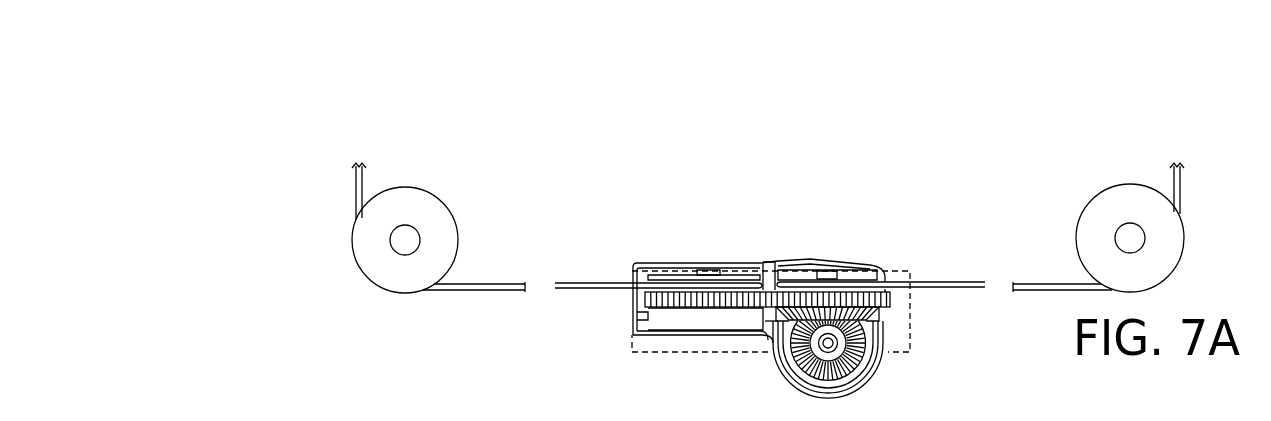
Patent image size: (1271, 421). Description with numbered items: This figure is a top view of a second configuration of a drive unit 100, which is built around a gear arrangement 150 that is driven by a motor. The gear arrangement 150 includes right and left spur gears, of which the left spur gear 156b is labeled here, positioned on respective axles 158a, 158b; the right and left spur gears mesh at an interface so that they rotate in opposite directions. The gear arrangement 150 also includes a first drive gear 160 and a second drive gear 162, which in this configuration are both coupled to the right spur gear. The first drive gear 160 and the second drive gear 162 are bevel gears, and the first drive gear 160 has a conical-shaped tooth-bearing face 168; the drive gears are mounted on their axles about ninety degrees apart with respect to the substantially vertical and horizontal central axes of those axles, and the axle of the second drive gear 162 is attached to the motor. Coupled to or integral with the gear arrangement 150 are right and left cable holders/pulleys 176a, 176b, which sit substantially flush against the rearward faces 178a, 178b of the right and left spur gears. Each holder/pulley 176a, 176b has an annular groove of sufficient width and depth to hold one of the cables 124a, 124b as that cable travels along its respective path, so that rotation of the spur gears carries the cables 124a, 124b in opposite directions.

The drive unit 100 is at (277, 157).
The cable 124a is at (1048, 283).
The cable 124b is at (497, 283).
The gear arrangement 150 is at (610, 325).
The left spur gear 156b is at (678, 296).
The axle 158a is at (828, 272).
The axle 158b is at (707, 272).
The first drive gear 160 is at (870, 320).
The second drive gear 162 is at (848, 362).
The tooth-bearing face 168 is at (783, 317).
The right cable holder/pulley 176a is at (800, 264).
The left cable holder/pulley 176b is at (740, 266).
The rearward face 178a is at (874, 270).
The rearward face 178b is at (652, 290).